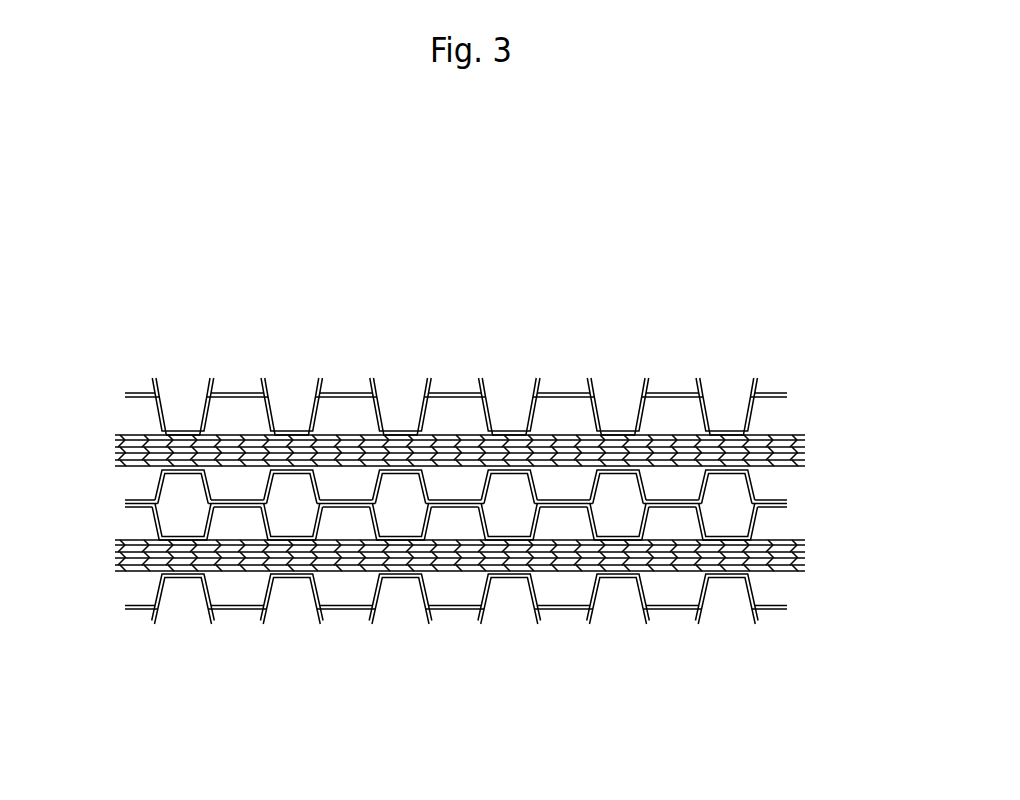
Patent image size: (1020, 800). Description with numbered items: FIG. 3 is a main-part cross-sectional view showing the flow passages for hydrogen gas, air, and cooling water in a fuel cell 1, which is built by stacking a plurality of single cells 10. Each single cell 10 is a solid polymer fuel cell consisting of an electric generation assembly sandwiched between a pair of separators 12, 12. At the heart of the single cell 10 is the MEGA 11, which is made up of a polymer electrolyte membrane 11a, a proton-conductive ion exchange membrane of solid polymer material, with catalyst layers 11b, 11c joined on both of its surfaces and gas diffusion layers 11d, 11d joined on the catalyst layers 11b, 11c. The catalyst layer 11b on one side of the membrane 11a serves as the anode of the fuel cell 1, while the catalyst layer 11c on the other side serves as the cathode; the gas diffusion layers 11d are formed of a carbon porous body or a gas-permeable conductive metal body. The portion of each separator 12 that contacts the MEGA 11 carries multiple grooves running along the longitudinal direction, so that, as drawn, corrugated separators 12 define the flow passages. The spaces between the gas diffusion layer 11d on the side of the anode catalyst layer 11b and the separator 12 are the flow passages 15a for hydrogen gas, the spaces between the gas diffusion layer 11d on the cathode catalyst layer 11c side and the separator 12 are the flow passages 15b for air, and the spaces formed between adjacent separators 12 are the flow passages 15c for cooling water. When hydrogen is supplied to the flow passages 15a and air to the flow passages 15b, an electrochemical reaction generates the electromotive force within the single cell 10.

The fuel cell 1 is at (200, 286).
The single cell 10 is at (55, 405).
The Membrane Electrode & Gas Diffusion Layer Assembly (MEGA) 11 is at (110, 433).
The polymer electrolyte membrane 11a is at (806, 449).
The catalyst layer 11b is at (806, 441).
The catalyst layer 11c is at (806, 455).
The gas diffusion layer 11d is at (805, 435).
The separator 12 is at (156, 413).
The flow passage 15a is at (225, 422).
The flow passage 15b is at (244, 482).
The flow passage 15c is at (422, 414).